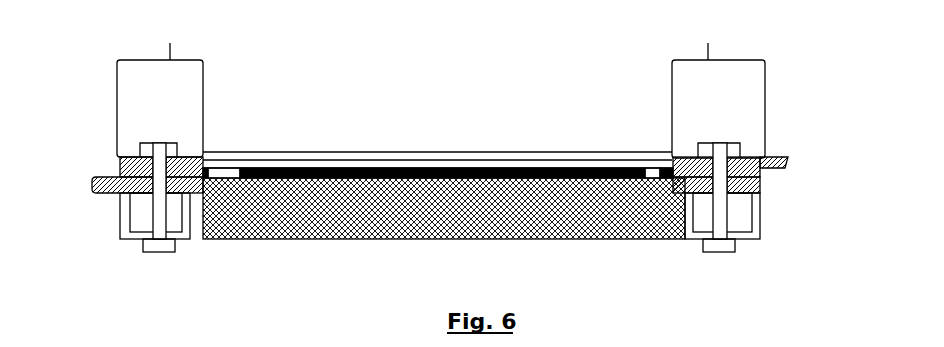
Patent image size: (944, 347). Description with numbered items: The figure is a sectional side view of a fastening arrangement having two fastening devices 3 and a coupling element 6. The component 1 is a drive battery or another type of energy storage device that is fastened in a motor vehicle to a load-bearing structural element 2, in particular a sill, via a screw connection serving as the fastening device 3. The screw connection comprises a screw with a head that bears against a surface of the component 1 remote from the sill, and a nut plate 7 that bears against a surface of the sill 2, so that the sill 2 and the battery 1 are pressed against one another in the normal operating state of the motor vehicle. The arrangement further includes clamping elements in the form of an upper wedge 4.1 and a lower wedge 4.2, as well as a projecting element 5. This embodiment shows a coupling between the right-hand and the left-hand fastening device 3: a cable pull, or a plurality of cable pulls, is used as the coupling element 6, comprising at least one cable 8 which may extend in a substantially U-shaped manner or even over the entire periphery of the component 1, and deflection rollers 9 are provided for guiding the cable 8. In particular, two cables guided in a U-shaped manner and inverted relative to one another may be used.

The component 1 is at (390, 213).
The load-bearing structural element 2 is at (203, 73).
The fastening device 3 is at (165, 215).
The upper wedge clamping element 4.1 is at (119, 163).
The lower wedge clamping element 4.2 is at (113, 181).
The projecting element 5 is at (783, 151).
The coupling element 6 is at (408, 168).
The nut plate 7 is at (173, 148).
The cable 8 is at (438, 173).
The deflection roller 9 is at (235, 160).